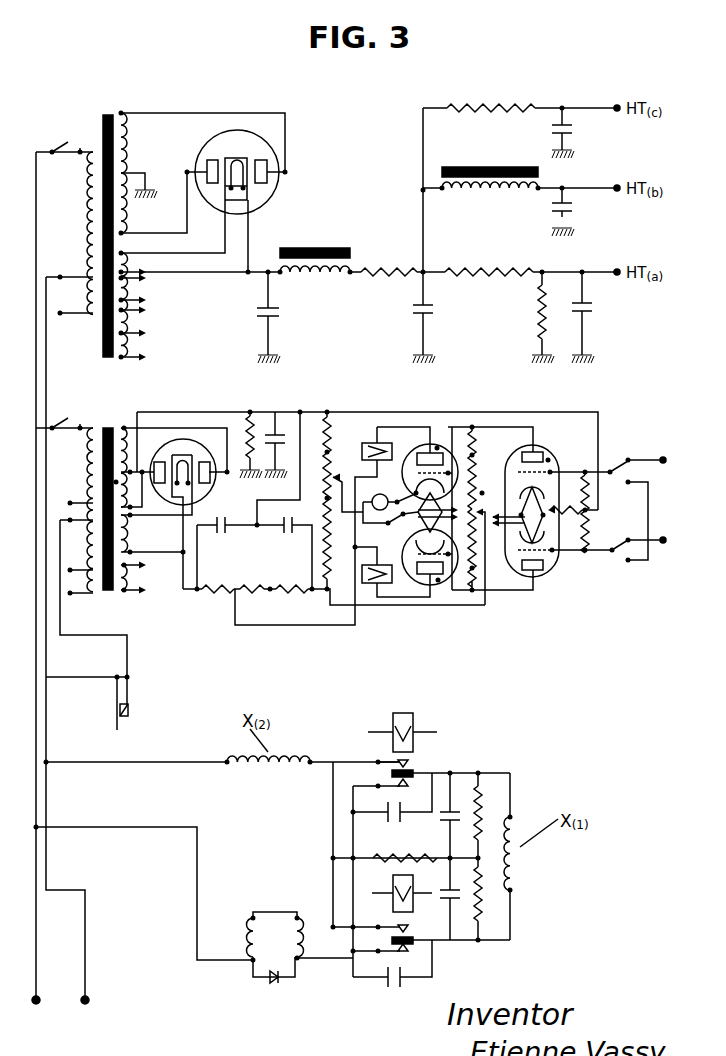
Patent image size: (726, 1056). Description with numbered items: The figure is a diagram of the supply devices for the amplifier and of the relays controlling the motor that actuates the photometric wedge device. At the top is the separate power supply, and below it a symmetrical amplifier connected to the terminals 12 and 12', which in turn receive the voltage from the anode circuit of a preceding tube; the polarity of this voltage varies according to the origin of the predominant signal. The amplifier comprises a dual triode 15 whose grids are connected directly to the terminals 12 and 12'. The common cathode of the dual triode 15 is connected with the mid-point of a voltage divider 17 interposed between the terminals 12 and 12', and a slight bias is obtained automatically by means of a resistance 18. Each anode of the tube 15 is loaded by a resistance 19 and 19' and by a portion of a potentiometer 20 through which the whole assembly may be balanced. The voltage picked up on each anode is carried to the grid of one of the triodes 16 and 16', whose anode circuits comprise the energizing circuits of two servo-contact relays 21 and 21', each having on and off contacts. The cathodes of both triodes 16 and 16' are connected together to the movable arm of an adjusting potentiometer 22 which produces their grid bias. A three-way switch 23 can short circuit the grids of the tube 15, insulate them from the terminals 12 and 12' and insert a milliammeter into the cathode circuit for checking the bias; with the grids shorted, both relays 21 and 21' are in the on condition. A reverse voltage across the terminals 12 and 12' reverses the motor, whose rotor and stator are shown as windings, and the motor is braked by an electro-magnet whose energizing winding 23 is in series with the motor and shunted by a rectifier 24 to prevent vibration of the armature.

The terminal 12 is at (653, 530).
The terminal 12' is at (654, 451).
The dual triode 15 is at (548, 460).
The triode 16 is at (444, 587).
The triode 16' is at (436, 437).
The voltage divider 17 is at (593, 530).
The resistance 18 is at (567, 518).
The resistance 19 is at (503, 569).
The resistance 19' is at (486, 441).
The potentiometer 20 is at (482, 493).
The servo-contact relay 21 is at (423, 776).
The servo-contact relay 21' is at (399, 562).
The adjusting potentiometer 22 is at (331, 470).
The three-way switch 23 is at (616, 466).
The rectifier 24 is at (277, 983).